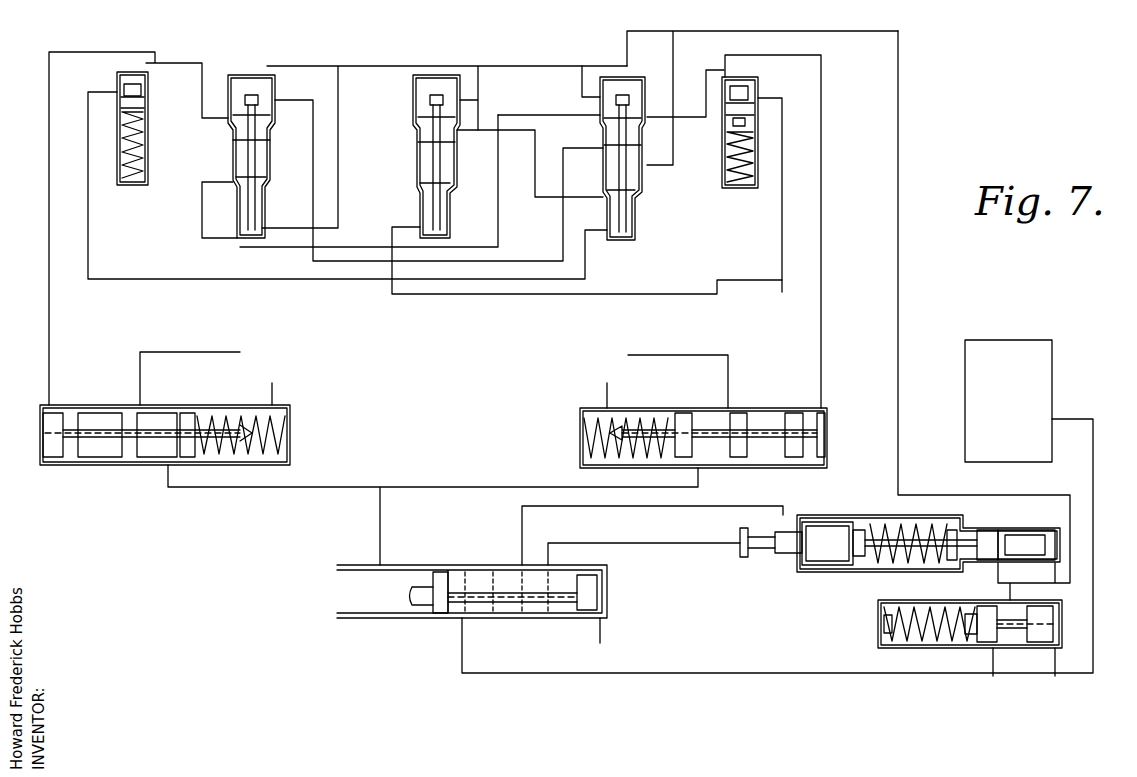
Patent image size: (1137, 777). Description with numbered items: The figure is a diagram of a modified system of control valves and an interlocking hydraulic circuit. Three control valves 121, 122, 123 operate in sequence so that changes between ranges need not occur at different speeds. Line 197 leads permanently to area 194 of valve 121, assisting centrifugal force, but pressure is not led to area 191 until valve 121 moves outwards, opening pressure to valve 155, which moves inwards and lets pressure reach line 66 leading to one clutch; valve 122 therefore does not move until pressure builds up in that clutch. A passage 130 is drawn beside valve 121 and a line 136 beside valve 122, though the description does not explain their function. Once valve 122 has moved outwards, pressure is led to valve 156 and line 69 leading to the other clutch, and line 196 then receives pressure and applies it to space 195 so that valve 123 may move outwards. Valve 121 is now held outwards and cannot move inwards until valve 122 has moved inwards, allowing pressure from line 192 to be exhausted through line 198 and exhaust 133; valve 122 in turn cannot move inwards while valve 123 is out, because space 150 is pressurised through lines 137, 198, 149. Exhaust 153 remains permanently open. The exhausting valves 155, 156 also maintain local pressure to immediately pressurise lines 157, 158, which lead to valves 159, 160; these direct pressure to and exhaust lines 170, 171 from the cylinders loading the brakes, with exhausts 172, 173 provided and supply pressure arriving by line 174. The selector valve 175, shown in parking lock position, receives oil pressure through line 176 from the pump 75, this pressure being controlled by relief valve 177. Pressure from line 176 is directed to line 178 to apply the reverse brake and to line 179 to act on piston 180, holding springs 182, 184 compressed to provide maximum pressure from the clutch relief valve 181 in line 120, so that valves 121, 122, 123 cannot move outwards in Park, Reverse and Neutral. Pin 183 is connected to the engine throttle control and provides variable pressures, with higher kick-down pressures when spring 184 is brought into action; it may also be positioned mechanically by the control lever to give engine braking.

The line 66 is at (88, 210).
The line 69 is at (782, 220).
The pump 75 is at (1008, 401).
The line 120 is at (898, 98).
The valve 121 is at (245, 75).
The valve 122 is at (603, 95).
The valve 123 is at (413, 110).
The passage 130 is at (272, 140).
The exhaust 133 is at (413, 140).
The conduit 136 is at (673, 70).
The line 137 is at (235, 188).
The line 149 is at (533, 188).
The space 150 is at (640, 200).
The exhaust 153 is at (413, 178).
The valve 155 is at (160, 92).
The valve 156 is at (49, 308).
The line 157 is at (49, 236).
The line 158 is at (823, 220).
The valve 159 is at (152, 447).
The valve 160 is at (708, 432).
The line 170 is at (210, 353).
The line 171 is at (697, 355).
The exhaust 172 is at (112, 465).
The exhaust 173 is at (752, 468).
The line 174 is at (342, 488).
The selector valve 175 is at (512, 598).
The line 176 is at (721, 668).
The relief valve 177 is at (1013, 633).
The line 178 is at (624, 545).
The line 179 is at (663, 507).
The piston 180 is at (823, 532).
The clutch relief valve 181 is at (1013, 543).
The spring 182 is at (855, 562).
The pin 183 is at (762, 547).
The spring 184 is at (877, 572).
The area 191 is at (617, 241).
The line 192 is at (272, 245).
The area 194 is at (237, 230).
The space 195 is at (448, 236).
The line 196 is at (503, 294).
The line 197 is at (339, 87).
The line 198 is at (513, 116).